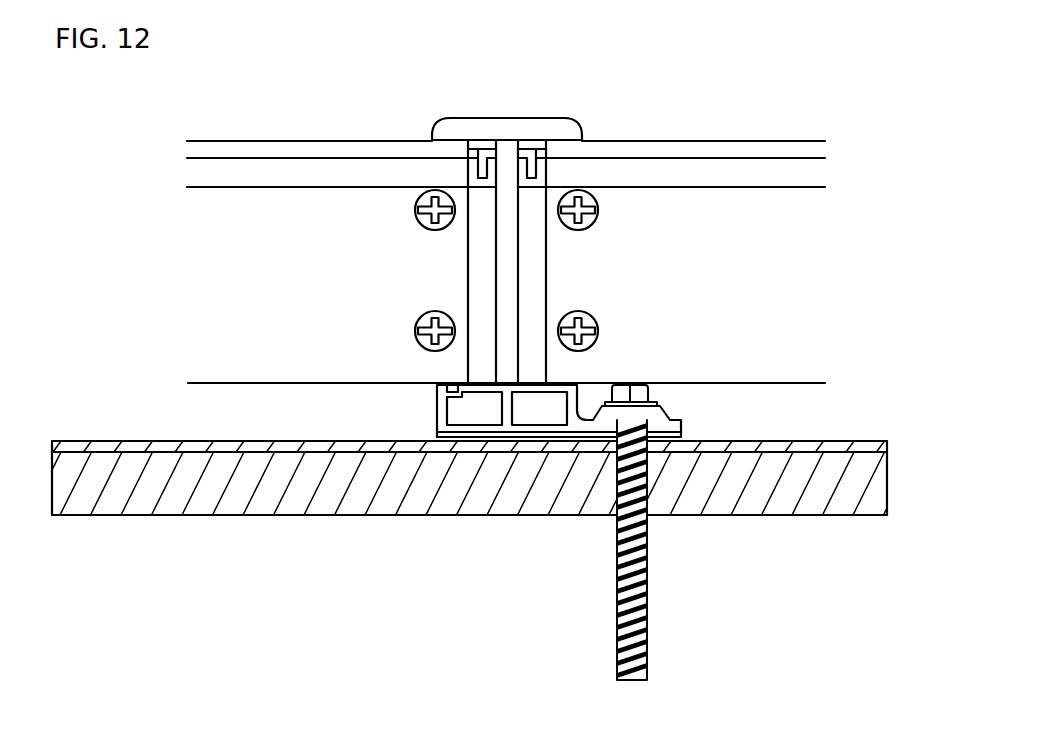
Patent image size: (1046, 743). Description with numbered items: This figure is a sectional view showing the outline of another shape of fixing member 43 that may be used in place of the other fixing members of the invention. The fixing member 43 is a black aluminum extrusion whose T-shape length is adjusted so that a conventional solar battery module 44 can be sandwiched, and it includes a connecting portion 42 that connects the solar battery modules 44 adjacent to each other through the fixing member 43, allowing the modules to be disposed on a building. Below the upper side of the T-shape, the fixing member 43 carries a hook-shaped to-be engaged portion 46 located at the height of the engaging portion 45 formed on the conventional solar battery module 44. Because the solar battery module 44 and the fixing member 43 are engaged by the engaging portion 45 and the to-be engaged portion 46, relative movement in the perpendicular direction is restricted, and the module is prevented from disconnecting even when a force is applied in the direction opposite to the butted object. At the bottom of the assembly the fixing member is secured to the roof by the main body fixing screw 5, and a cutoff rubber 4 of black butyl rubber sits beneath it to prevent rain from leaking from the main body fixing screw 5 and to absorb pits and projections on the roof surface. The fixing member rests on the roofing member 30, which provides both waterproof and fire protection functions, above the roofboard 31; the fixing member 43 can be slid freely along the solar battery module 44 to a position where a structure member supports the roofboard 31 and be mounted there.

The cutoff rubber 4 is at (478, 435).
The main body fixing screw 5 is at (642, 385).
The roofing member 30 is at (122, 443).
The roofboard 31 is at (150, 492).
The connecting portion 42 is at (577, 156).
The fixing member 43 is at (485, 127).
The solar battery module 44 is at (342, 165).
The engaging portion 45 is at (527, 160).
The to-be engaged portion 46 is at (480, 152).